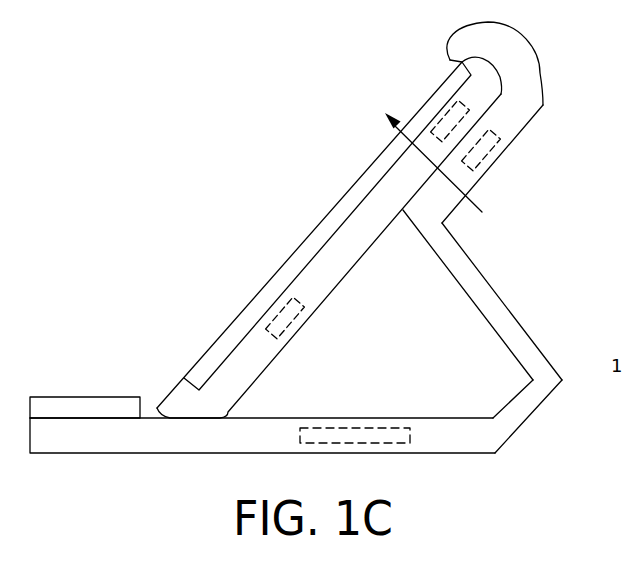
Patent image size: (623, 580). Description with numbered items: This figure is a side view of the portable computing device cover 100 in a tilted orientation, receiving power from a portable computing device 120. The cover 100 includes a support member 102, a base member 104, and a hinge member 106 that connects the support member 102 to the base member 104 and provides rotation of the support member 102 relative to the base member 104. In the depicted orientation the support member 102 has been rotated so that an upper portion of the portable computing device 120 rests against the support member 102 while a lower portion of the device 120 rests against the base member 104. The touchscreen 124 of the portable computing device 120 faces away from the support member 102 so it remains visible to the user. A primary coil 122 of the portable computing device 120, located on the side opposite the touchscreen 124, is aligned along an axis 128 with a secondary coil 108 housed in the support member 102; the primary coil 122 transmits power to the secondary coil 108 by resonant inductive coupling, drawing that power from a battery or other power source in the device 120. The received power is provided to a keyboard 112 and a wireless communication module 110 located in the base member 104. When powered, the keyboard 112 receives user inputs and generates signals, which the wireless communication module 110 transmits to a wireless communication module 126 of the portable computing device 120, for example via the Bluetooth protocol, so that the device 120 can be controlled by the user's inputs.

The portable computing device cover 100 is at (552, 60).
The support member 102 is at (480, 270).
The base member 104 is at (97, 453).
The hinge member 106 is at (543, 401).
The secondary coil 108 is at (488, 148).
The wireless communication module 110 is at (383, 428).
The keyboard 112 is at (102, 397).
The portable computing device 120 is at (411, 61).
The primary coil 122 is at (457, 118).
The touchscreen 124 is at (342, 198).
The wireless communication module 126 is at (293, 318).
The axis 128 is at (483, 207).